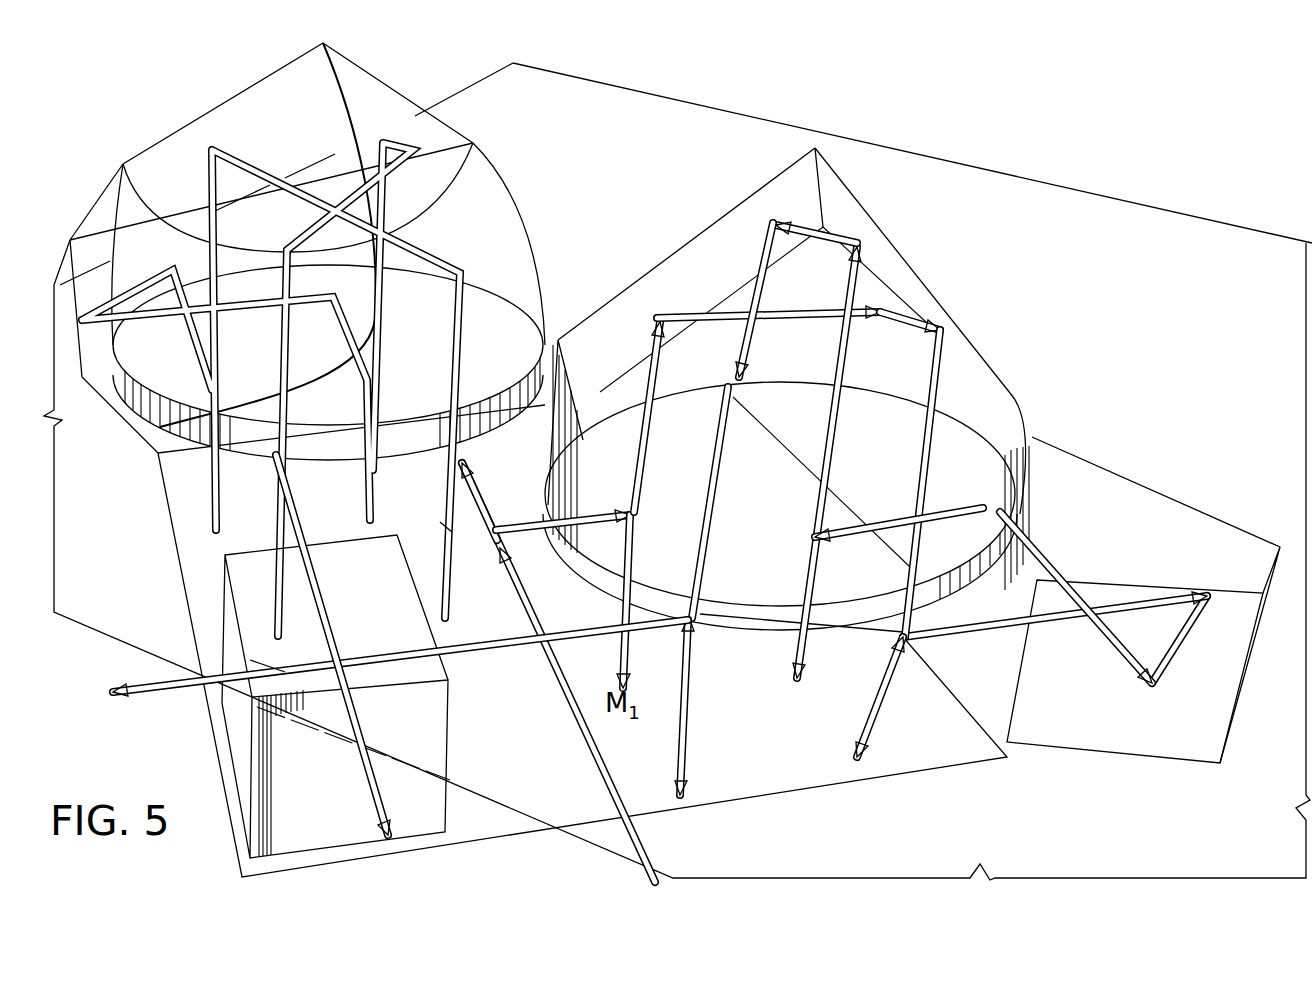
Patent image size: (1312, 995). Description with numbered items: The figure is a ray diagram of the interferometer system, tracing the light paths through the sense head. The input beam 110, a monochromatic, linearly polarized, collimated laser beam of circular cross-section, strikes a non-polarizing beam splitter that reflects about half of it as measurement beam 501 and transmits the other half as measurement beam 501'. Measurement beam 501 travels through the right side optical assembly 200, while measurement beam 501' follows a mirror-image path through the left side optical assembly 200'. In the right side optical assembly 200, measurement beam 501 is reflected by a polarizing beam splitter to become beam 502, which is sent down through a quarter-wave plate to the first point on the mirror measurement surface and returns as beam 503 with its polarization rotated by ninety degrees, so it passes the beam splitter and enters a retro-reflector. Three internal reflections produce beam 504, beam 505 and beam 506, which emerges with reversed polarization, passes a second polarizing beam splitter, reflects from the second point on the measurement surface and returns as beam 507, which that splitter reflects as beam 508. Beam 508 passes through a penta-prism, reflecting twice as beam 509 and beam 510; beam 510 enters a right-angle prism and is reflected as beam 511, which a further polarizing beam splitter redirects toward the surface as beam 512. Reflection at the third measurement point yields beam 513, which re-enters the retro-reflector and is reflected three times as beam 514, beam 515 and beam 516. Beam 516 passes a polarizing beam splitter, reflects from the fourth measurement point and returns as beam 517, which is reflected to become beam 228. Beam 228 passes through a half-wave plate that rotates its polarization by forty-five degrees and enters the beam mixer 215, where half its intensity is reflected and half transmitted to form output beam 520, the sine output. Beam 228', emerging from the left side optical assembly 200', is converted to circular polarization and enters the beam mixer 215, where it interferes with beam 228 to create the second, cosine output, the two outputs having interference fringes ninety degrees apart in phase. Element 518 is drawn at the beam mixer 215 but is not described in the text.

The input beam 110 is at (640, 840).
The right side optical assembly 200 is at (786, 369).
The left side optical assembly 200' is at (307, 339).
The beam mixer 215 is at (237, 732).
The beam 228 is at (400, 690).
The beam 228' is at (342, 645).
The measurement beam 501 is at (497, 498).
The measurement beam 501' is at (395, 549).
The beam 502 is at (612, 589).
The beam 503 is at (640, 482).
The beam 504 is at (717, 313).
The beam 505 is at (917, 313).
The beam 506 is at (937, 362).
The beam 507 is at (892, 703).
The beam 508 is at (1040, 620).
The beam 509 is at (1165, 665).
The beam 510 is at (1047, 558).
The beam 511 is at (1020, 493).
The beam 512 is at (813, 567).
The beam 513 is at (797, 550).
The beam 514 is at (830, 247).
The beam 515 is at (767, 250).
The beam 516 is at (720, 495).
The beam 517 is at (677, 723).
The beam splitter coating 518 is at (345, 708).
The output beam 520 is at (268, 662).